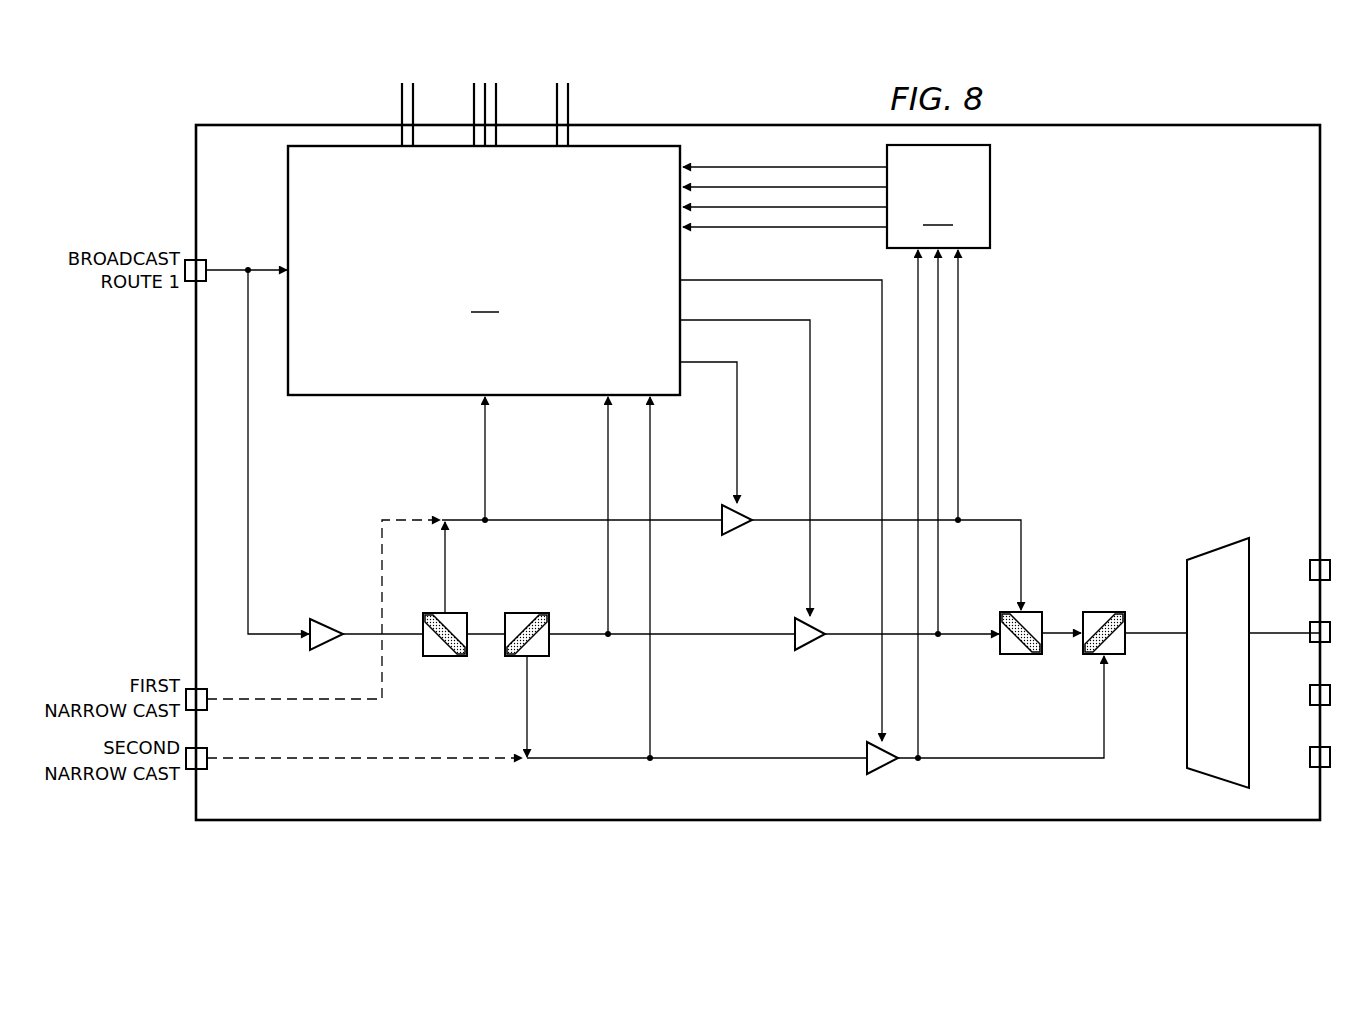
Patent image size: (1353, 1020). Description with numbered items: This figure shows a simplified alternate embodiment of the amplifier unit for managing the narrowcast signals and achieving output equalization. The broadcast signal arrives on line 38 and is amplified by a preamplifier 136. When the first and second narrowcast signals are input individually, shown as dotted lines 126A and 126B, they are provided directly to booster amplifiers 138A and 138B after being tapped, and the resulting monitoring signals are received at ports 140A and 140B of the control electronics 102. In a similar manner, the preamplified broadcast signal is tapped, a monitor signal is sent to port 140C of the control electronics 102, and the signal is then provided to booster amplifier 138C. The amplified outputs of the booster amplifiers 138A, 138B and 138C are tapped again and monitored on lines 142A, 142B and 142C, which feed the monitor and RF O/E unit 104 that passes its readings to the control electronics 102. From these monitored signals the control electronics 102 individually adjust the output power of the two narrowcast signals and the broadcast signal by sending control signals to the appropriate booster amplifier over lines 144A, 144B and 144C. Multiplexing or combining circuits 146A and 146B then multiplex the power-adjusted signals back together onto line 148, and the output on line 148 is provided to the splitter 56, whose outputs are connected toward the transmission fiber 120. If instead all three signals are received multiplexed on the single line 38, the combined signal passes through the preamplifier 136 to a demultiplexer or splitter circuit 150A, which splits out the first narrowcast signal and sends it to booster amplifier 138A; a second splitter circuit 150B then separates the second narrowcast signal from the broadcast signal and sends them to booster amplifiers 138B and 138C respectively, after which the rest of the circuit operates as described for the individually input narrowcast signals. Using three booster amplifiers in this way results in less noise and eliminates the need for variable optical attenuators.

The broadcast signal line 38 is at (226, 269).
The control electronics 102 is at (484, 270).
The monitor and RF O/E unit 104 is at (836, 196).
The preamplifier 136 is at (326, 624).
The demultiplexer or splitter circuit 150A is at (440, 658).
The splitter circuit 150B is at (532, 612).
The port 140A is at (484, 462).
The port 140B is at (651, 457).
The port 140C is at (607, 462).
The control signal line 144A is at (736, 432).
The control signal line 144B is at (834, 281).
The control signal line 144C is at (764, 322).
The booster amplifier 138A is at (742, 534).
The booster amplifier 138B is at (886, 775).
The booster amplifier 138C is at (812, 648).
The monitor line 142A is at (960, 383).
The monitor line 142B is at (919, 698).
The monitor line 142C is at (939, 562).
The multiplexing or combining circuit 146A is at (1030, 655).
The multiplexing or combining circuit 146B is at (1110, 612).
The output line 148 is at (1145, 636).
The splitter 56 is at (1218, 548).
The transmission fiber 120 is at (1283, 636).
The first narrowcast signal line 126A is at (275, 701).
The second narrowcast signal line 126B is at (370, 761).